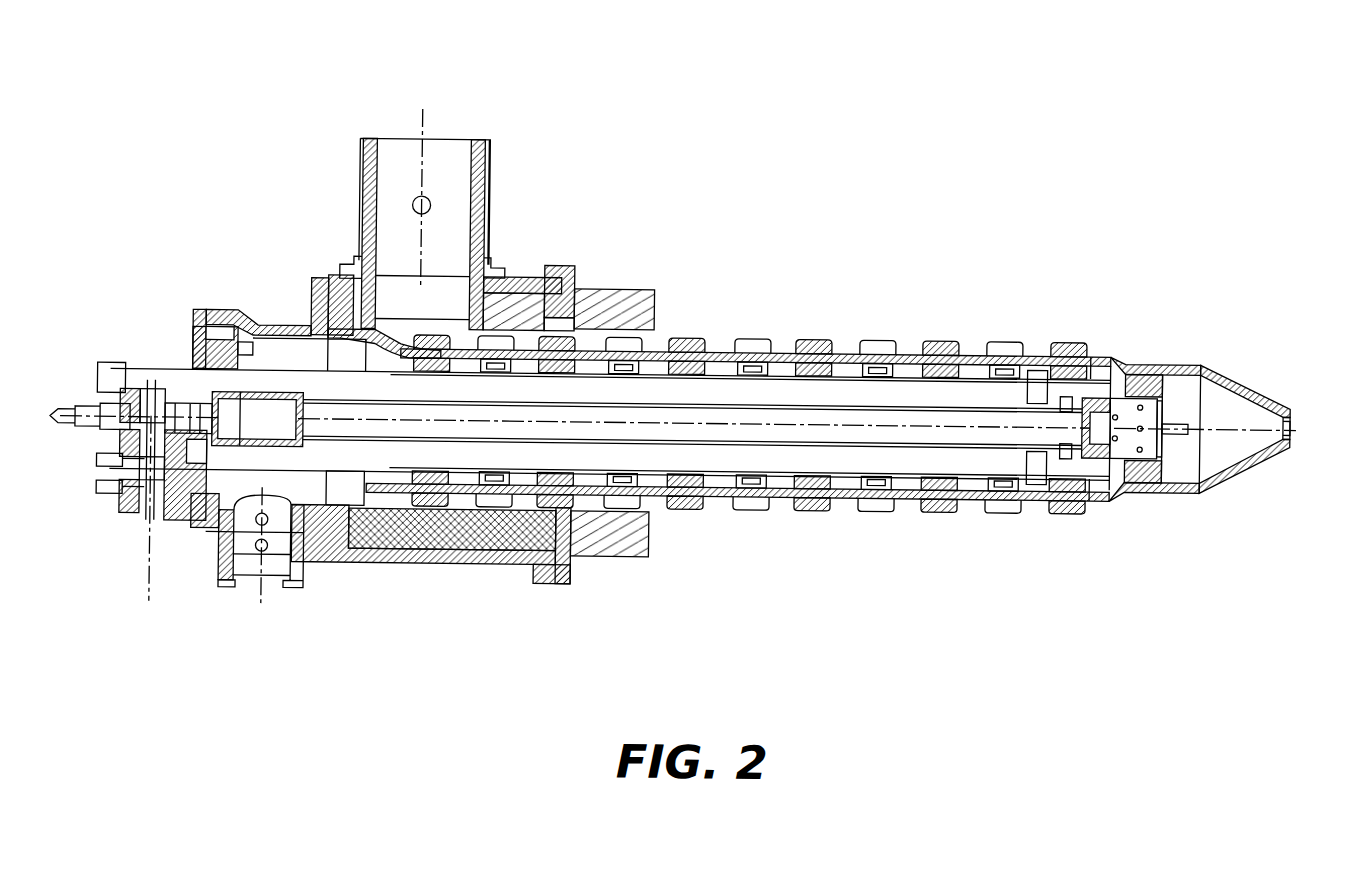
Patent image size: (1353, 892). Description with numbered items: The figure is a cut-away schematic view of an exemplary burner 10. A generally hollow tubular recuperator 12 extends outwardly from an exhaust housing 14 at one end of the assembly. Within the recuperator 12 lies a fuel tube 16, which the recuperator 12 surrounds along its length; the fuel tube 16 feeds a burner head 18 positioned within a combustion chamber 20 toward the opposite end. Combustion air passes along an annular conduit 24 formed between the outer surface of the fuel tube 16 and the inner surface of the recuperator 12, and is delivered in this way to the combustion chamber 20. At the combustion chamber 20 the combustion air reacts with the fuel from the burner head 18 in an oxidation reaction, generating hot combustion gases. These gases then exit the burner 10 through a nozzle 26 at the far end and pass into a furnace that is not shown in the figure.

The burner 10 is at (898, 183).
The recuperator 12 is at (944, 335).
The exhaust housing 14 is at (455, 562).
The fuel tube 16 is at (795, 415).
The burner head 18 is at (1127, 383).
The combustion chamber 20 is at (1104, 480).
The annular conduit 24 is at (732, 387).
The nozzle 26 is at (1290, 418).